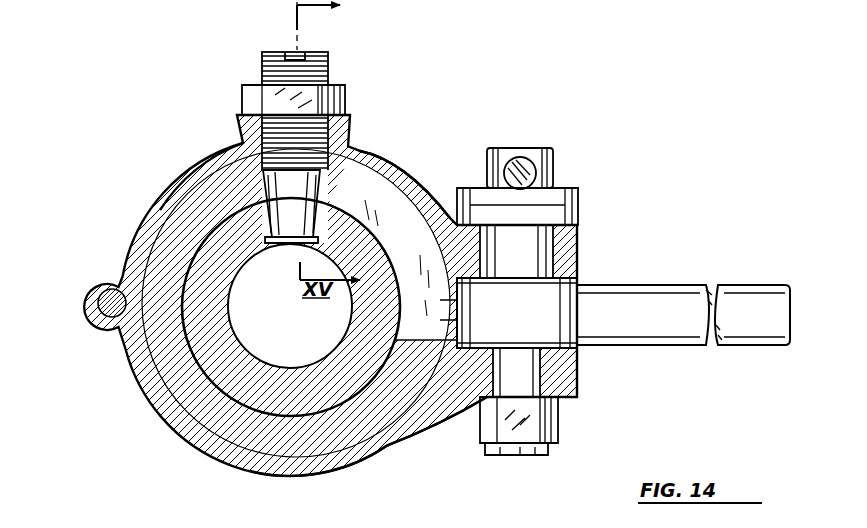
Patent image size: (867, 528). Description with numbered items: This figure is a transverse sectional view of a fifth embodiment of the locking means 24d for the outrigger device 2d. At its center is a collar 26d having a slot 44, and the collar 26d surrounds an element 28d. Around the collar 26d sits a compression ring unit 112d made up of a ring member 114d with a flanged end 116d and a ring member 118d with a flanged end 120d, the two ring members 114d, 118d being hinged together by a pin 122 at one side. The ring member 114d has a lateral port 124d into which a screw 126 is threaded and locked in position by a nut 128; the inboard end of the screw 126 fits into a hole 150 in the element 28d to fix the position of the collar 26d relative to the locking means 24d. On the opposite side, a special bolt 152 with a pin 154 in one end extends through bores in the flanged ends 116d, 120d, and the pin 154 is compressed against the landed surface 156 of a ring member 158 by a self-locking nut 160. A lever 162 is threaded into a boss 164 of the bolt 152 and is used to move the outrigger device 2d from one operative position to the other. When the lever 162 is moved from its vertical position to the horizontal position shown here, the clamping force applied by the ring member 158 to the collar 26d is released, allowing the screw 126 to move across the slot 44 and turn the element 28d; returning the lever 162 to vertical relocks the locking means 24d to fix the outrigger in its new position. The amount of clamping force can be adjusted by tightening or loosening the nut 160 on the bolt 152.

The device 2d is at (160, 433).
The locking means 24d is at (387, 449).
The collar 26d is at (270, 458).
The element 28d is at (222, 356).
The slot 44 is at (391, 222).
The compression ring unit 112d is at (394, 165).
The ring member 114d is at (216, 153).
The flanged end 116d is at (585, 240).
The ring member 118d is at (295, 478).
The flanged end 120d is at (580, 381).
The pin 122 is at (86, 300).
The lateral port 124d is at (352, 120).
The screw 126 is at (328, 58).
The nut 128 is at (346, 92).
The hole 150 is at (284, 247).
The special bolt 152 is at (548, 152).
The pin 154 is at (520, 158).
The landed surface 156 is at (570, 190).
The ring member 158 is at (580, 207).
The self-locking nut 160 is at (560, 426).
The lever 162 is at (675, 285).
The boss 164 is at (585, 277).